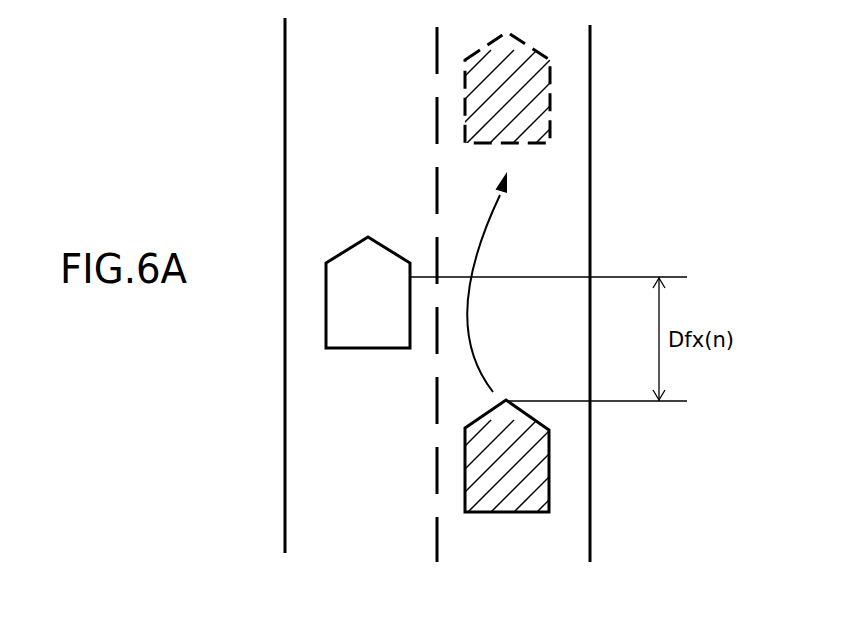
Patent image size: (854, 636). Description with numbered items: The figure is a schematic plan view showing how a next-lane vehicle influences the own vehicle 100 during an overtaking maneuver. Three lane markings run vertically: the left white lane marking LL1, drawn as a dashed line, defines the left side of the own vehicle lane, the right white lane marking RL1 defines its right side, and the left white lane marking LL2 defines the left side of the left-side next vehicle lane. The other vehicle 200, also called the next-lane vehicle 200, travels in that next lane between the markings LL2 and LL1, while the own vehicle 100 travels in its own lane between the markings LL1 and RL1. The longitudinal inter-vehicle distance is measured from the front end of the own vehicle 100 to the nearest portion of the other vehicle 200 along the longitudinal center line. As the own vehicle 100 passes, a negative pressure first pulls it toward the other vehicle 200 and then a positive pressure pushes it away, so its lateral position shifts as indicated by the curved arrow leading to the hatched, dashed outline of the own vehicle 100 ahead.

The own vehicle 100 is at (550, 100).
The other vehicle 200 is at (326, 315).
The left white lane marking LL1 is at (437, 311).
The left white lane marking LL2 is at (285, 306).
The right white lane marking RL1 is at (589, 310).